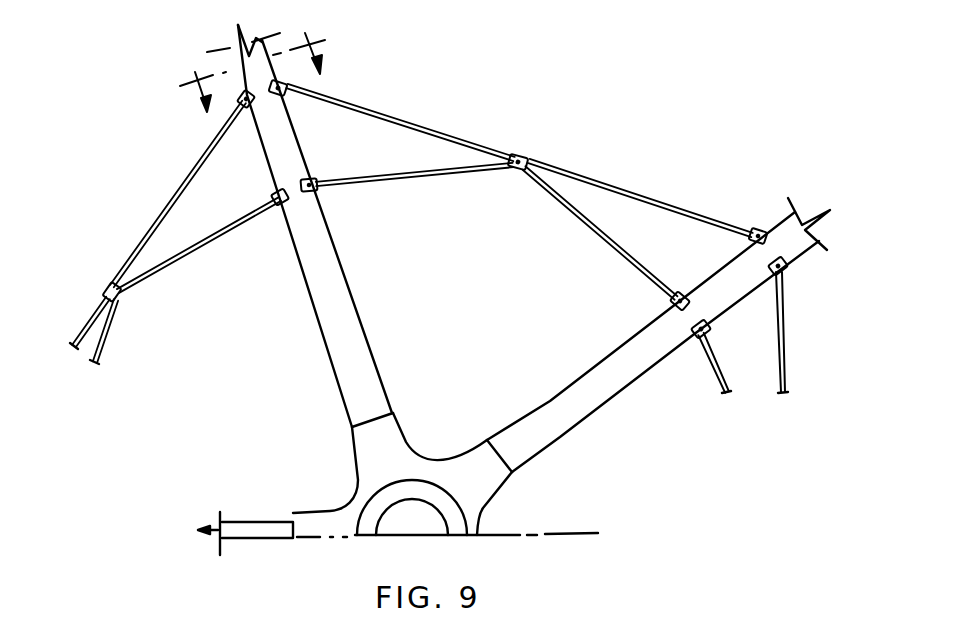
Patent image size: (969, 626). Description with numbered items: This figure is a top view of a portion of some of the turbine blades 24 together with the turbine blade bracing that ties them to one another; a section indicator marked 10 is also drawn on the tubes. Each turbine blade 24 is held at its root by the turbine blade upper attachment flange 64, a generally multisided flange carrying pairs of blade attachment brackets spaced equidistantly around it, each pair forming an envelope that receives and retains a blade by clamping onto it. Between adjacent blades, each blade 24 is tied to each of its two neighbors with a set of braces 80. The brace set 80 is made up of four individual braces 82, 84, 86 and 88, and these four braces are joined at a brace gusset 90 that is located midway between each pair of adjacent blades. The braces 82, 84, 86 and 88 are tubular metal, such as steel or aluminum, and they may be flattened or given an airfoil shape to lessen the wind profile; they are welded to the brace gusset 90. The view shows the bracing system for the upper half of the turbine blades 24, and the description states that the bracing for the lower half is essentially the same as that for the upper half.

The section line for FIG. 10 is at (249, 60).
The turbine blade 24 is at (338, 380).
The turbine blade upper attachment flange 64 is at (487, 513).
The set of braces 80 is at (450, 133).
The brace 82 is at (322, 91).
The brace 84 is at (358, 188).
The brace 86 is at (693, 210).
The brace 88 is at (558, 203).
The brace gusset 90 is at (520, 153).